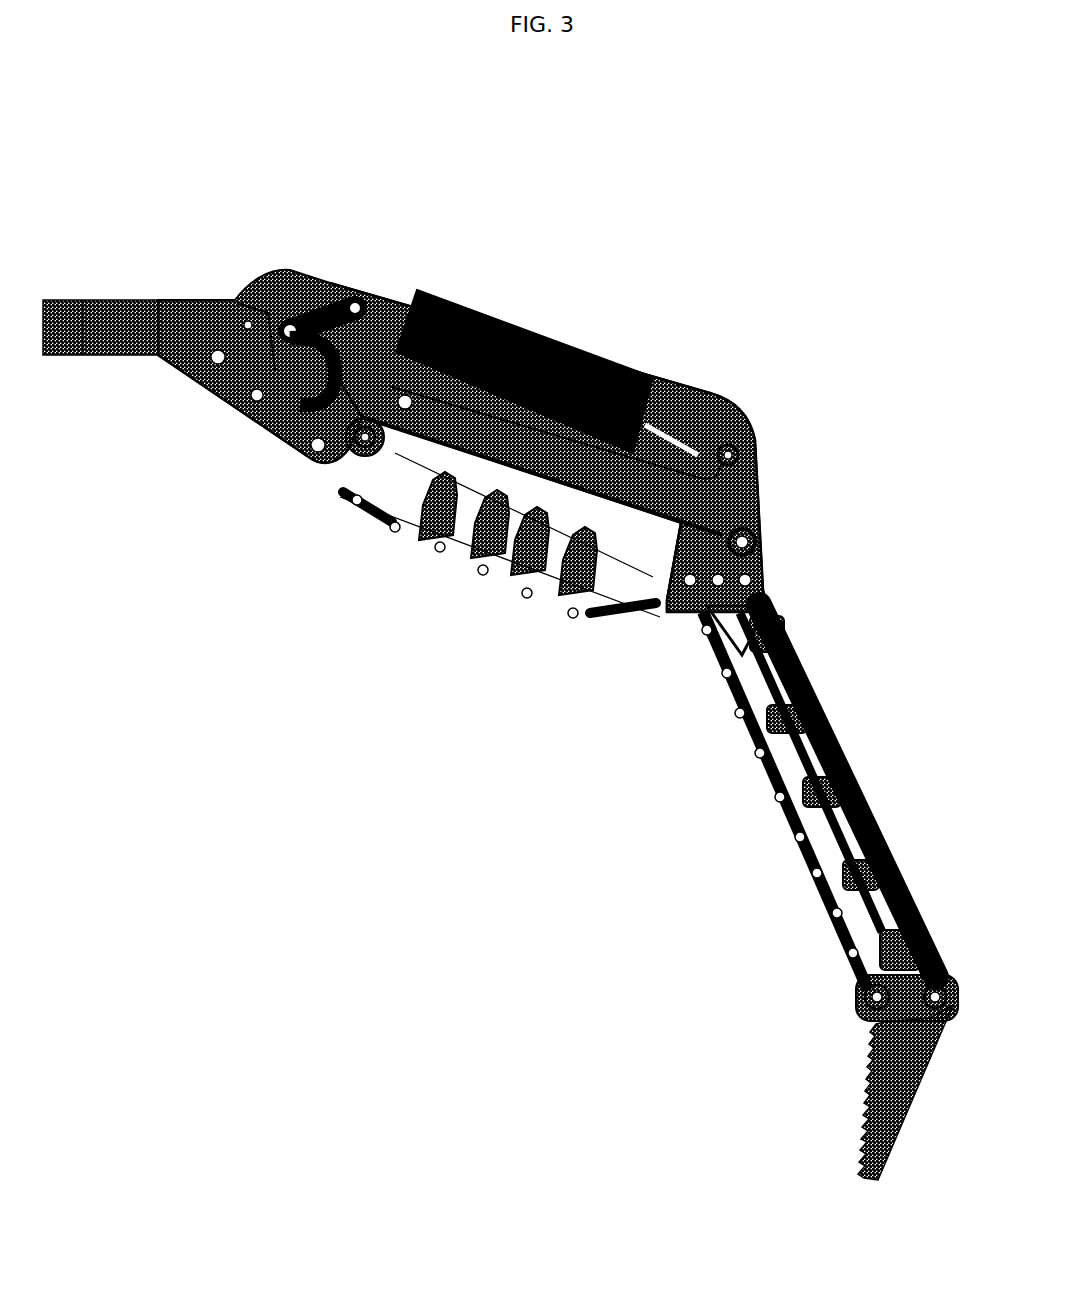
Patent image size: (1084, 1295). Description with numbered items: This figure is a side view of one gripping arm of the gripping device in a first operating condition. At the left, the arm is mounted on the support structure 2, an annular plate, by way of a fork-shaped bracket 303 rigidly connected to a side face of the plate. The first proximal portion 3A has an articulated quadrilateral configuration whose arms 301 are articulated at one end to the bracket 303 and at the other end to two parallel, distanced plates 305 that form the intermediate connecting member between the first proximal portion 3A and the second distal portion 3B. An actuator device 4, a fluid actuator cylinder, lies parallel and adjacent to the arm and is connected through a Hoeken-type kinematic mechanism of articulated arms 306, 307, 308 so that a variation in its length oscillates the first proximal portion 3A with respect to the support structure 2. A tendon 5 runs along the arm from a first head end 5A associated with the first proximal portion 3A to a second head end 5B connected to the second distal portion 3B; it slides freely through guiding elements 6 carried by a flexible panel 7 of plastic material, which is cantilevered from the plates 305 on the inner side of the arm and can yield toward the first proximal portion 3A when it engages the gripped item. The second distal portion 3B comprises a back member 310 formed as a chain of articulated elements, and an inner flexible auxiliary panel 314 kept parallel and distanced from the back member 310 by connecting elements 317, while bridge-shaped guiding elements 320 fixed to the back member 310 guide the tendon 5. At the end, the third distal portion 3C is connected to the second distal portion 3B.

The support structure 2 is at (134, 296).
The first proximal portion 3A is at (485, 447).
The second distal portion 3B is at (818, 791).
The third distal portion 3C is at (866, 1112).
The actuator device 4 is at (480, 338).
The tendon 5 is at (480, 580).
The first head end 5A is at (362, 452).
The second head end 5B is at (880, 948).
The guiding elements 6 is at (548, 590).
The flexible panel 7 is at (591, 631).
The arm 301 is at (720, 395).
The bracket 303 is at (226, 384).
The plates 305 is at (660, 540).
The articulated arm 306 is at (308, 322).
The articulated arm 307 is at (300, 392).
The articulated arm 308 is at (562, 484).
The back member 310 is at (888, 831).
The flexible auxiliary panel 314 is at (815, 894).
The connecting elements 317 is at (805, 760).
The guiding elements 320 is at (783, 697).